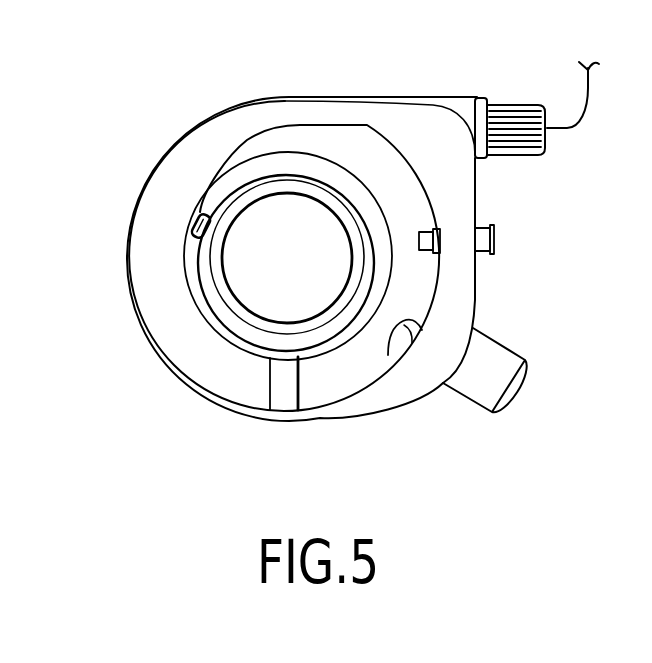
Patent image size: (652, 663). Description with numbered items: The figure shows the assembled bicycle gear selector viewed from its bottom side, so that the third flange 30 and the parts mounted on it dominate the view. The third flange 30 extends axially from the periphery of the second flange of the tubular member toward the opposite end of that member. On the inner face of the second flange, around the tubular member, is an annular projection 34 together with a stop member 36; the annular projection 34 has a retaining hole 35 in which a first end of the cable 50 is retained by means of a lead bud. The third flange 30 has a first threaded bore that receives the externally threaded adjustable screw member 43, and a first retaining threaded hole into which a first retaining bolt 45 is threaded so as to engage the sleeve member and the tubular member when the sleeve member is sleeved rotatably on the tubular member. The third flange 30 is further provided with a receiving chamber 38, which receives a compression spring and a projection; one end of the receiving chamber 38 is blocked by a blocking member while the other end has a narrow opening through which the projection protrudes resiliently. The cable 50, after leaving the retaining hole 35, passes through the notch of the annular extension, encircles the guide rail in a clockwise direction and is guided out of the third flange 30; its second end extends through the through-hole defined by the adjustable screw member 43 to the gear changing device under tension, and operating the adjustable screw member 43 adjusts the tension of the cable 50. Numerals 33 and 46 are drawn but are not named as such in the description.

The third flange 30 is at (381, 88).
The rotatable dial 33 is at (220, 132).
The annular projection 34 is at (187, 262).
The retaining hole 35 is at (196, 212).
The stop member 36 is at (273, 387).
The receiving chamber 38 is at (494, 341).
The adjustable screw member 43 is at (515, 105).
The first retaining bolt 45 is at (495, 238).
The lever lug 46 is at (388, 355).
The cable 50 is at (620, 113).